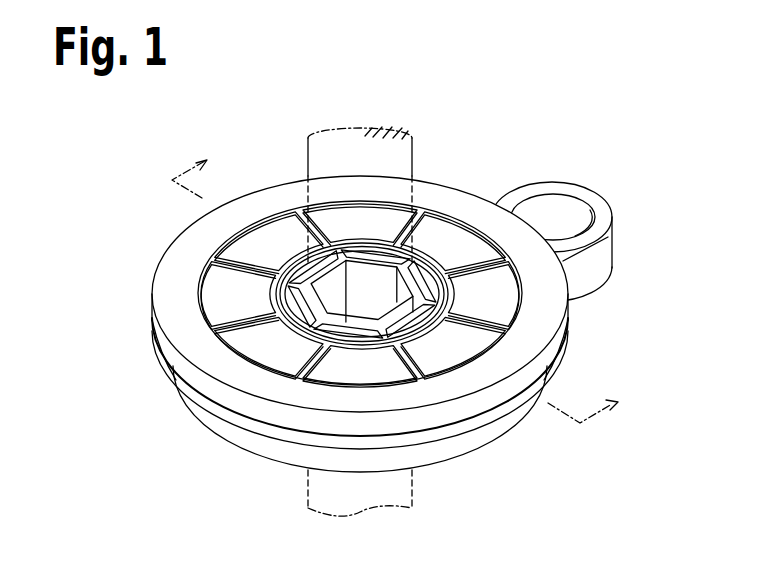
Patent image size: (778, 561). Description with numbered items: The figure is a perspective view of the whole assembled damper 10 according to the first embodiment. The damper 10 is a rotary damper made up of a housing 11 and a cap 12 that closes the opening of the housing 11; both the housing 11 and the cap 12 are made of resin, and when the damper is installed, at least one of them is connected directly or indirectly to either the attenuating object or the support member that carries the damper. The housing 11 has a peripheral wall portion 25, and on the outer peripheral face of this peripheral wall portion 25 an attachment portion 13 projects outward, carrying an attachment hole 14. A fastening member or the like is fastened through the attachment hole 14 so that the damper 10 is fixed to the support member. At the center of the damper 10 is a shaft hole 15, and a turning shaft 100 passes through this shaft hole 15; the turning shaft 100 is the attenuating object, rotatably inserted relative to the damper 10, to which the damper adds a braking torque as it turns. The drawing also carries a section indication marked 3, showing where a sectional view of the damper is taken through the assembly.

The damper 10 is at (127, 156).
The housing 11 is at (200, 420).
The cap 12 is at (152, 294).
The attachment portion 13 is at (552, 182).
The attachment hole 14 is at (578, 230).
The shaft hole 15 is at (300, 304).
The peripheral wall portion 25 is at (540, 402).
The turning shaft 100 is at (412, 136).
The section line of FIG. 3 is at (407, 277).